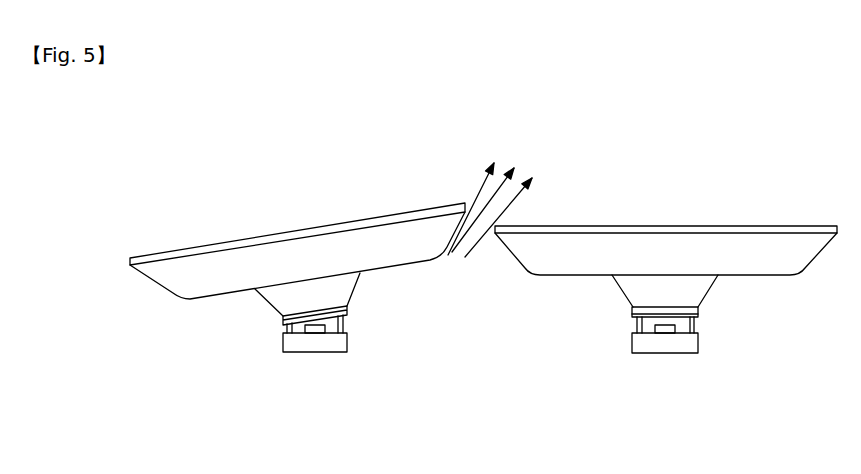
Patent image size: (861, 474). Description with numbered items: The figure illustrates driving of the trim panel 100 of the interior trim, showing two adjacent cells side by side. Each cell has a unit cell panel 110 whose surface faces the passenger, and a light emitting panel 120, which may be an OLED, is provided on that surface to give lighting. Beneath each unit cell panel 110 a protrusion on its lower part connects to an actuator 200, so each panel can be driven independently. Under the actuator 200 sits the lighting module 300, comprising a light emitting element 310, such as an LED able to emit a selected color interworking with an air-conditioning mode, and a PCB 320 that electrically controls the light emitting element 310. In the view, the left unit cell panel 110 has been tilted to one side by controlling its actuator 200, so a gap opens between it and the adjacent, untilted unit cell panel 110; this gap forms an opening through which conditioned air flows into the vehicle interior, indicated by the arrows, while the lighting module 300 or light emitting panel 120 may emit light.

The trim panel 100 is at (483, 213).
The unit cell panel 110 is at (297, 255).
The light emitting panel 120 is at (357, 222).
The actuator 200 is at (348, 322).
The lighting module 300 is at (287, 380).
The light emitting element 310 is at (317, 333).
The PCB 320 is at (328, 415).